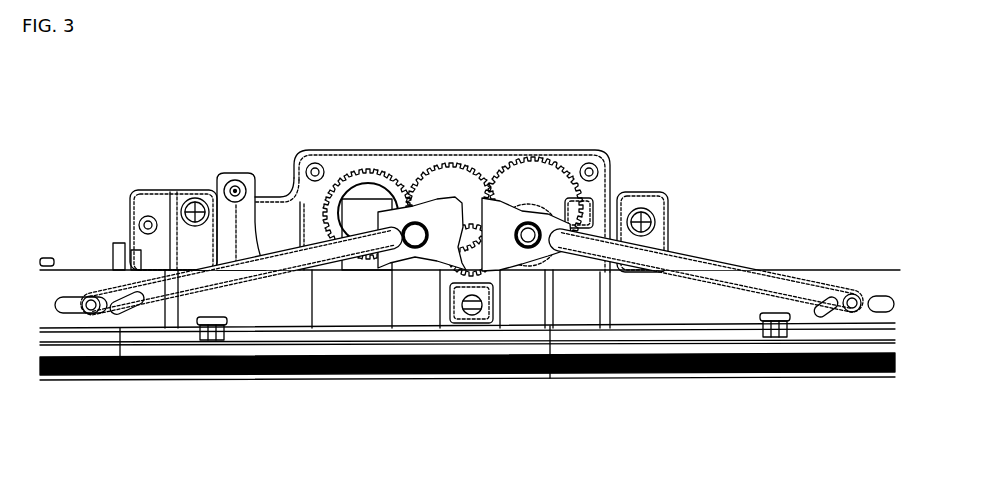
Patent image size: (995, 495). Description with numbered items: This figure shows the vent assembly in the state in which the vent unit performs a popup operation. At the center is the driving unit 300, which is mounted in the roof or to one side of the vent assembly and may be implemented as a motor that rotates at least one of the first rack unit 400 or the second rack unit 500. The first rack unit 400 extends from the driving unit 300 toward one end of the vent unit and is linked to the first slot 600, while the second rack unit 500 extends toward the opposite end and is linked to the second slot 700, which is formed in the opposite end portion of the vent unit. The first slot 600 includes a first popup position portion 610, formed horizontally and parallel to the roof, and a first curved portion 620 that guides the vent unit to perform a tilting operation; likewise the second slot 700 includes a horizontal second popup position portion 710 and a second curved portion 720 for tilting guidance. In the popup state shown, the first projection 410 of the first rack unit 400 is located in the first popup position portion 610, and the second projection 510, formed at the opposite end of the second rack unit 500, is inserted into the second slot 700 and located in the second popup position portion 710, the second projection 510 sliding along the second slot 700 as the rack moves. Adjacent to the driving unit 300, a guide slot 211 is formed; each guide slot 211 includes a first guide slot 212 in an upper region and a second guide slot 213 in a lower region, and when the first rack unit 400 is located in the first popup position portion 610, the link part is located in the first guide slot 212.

The guide slot 211 is at (166, 207).
The first guide slot 212 is at (205, 195).
The second guide slot 213 is at (235, 228).
The driving unit 300 is at (540, 150).
The first rack unit 400 is at (318, 247).
The first projection 410 is at (91, 314).
The second rack unit 500 is at (672, 264).
The second projection 510 is at (855, 294).
The first slot 600 is at (87, 250).
The first popup position portion 610 is at (57, 297).
The first curved portion 620 is at (137, 296).
The second slot 700 is at (470, 365).
The second popup position portion 710 is at (882, 309).
The second curved portion 720 is at (818, 313).